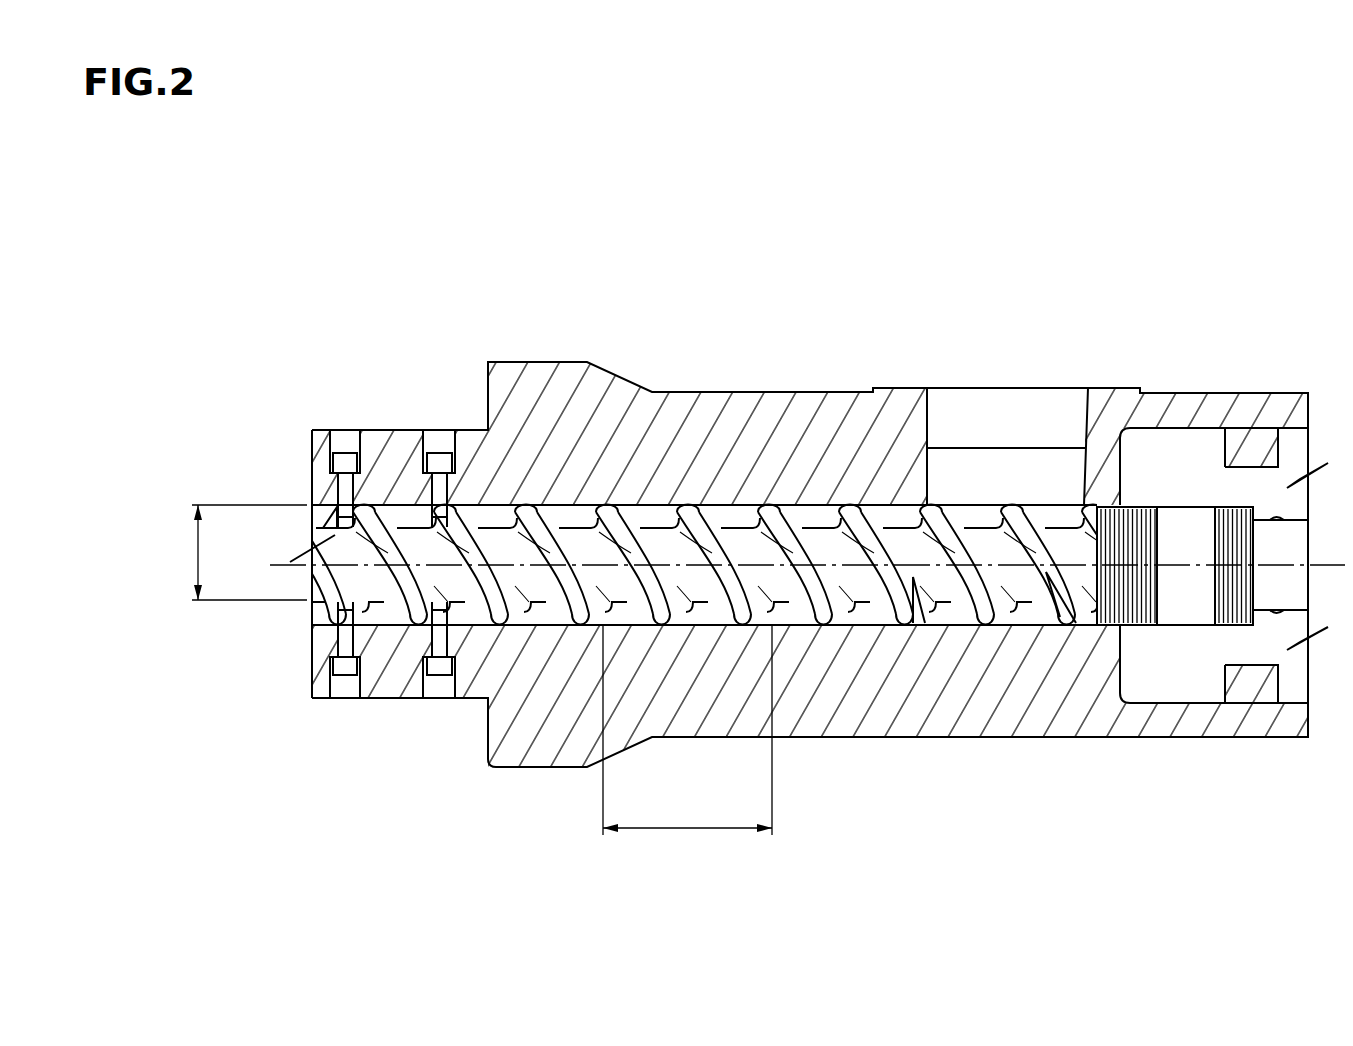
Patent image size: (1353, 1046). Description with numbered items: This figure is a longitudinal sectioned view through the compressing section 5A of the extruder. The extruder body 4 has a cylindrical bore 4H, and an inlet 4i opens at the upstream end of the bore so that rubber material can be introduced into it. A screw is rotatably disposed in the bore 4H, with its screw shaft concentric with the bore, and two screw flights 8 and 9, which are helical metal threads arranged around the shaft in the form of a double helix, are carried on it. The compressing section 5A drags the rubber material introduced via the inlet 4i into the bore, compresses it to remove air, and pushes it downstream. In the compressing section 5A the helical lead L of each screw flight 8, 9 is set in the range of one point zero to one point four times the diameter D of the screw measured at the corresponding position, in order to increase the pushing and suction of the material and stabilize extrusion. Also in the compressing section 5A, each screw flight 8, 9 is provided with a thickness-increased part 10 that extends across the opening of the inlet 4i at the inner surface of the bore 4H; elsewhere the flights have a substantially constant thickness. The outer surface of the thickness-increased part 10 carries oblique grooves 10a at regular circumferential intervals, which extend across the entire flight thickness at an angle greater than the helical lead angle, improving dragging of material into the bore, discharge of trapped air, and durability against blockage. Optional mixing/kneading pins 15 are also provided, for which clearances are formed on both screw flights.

The extruder body 4 is at (692, 392).
The inlet 4i is at (988, 478).
The cylindrical bore 4H is at (387, 625).
The mixing/kneading pins 15 is at (443, 460).
The compressing section 5A is at (1097, 383).
The screw flight 9 is at (731, 535).
The screw flight 8 is at (818, 504).
The thickness-increased part 10 is at (1072, 503).
The oblique grooves 10a is at (980, 615).
The diameter of the screw D is at (239, 552).
The helical lead L is at (687, 730).